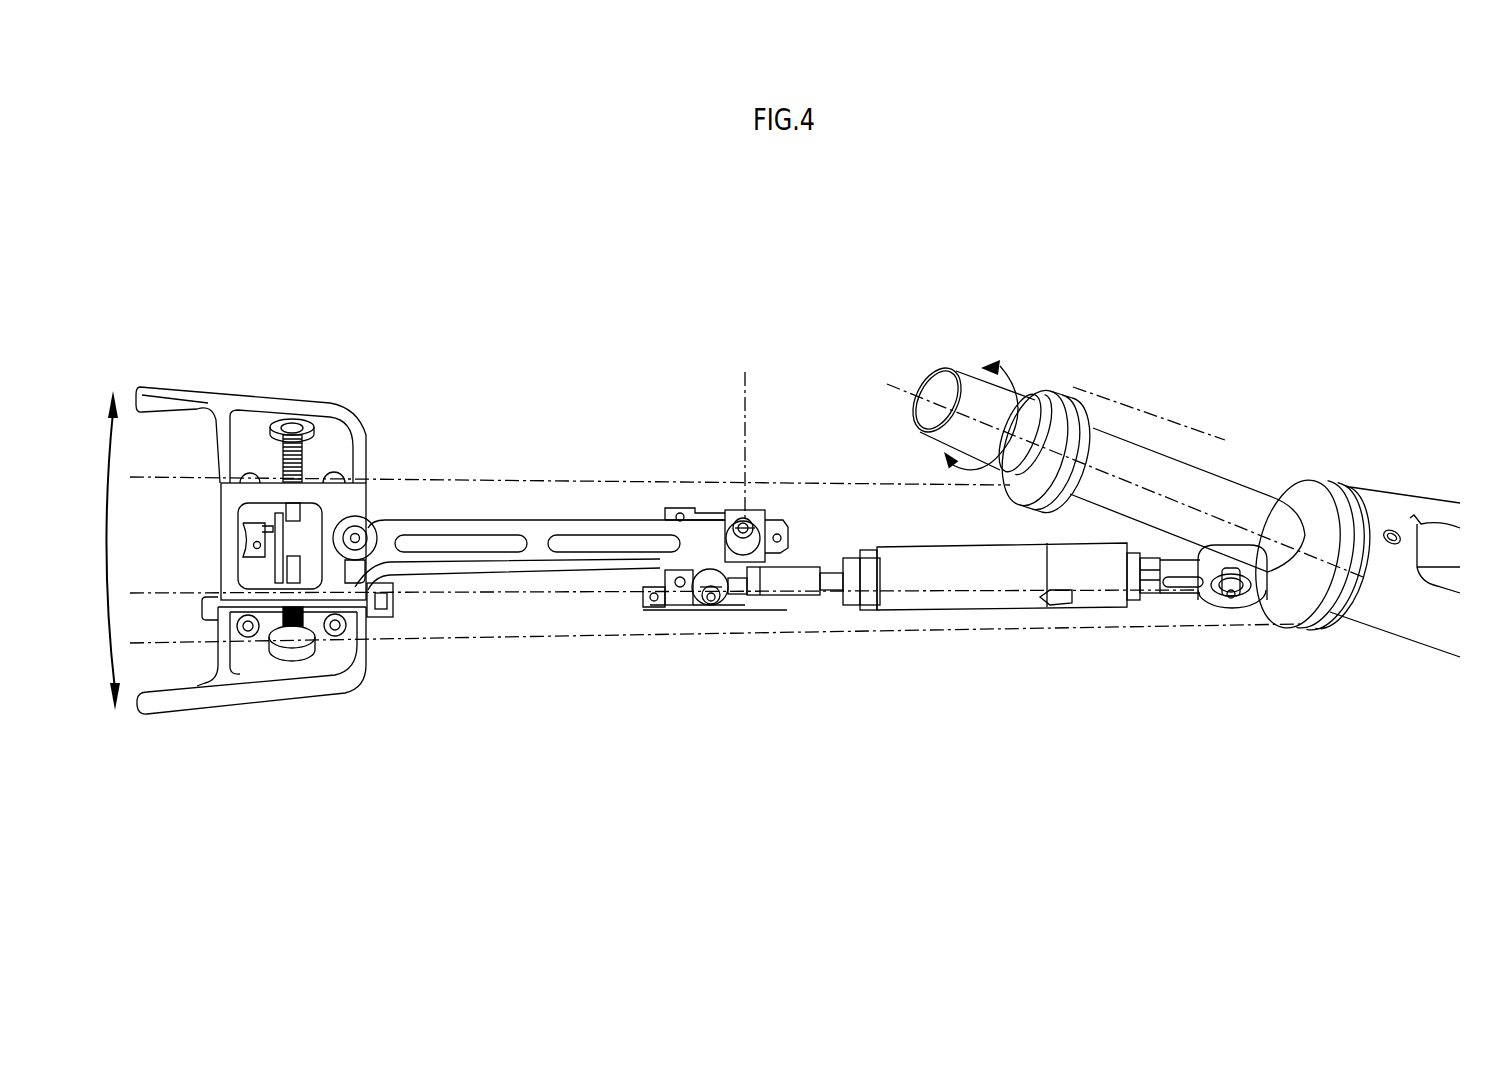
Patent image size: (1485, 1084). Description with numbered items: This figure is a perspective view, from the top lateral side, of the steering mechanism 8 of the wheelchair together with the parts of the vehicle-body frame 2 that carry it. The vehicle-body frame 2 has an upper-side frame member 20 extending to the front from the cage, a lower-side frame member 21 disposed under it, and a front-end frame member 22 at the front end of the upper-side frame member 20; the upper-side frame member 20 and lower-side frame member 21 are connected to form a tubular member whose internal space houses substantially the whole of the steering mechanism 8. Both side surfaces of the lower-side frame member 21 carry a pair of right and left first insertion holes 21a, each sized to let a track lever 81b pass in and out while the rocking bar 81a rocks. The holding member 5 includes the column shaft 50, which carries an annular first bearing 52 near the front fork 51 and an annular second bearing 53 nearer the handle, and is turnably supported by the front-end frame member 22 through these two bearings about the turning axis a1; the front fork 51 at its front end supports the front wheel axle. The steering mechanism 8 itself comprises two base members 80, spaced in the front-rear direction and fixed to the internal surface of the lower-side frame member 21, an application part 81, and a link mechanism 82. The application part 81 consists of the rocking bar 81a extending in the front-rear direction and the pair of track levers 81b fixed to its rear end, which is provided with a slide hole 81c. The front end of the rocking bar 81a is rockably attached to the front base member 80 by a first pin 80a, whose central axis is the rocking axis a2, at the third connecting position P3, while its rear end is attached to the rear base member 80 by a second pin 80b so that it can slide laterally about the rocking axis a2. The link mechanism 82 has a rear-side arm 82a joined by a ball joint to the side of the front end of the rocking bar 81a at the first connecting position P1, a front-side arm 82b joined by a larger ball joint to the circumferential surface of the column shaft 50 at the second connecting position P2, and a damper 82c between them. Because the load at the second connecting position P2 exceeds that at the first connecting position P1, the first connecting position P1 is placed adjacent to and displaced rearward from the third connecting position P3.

The vehicle-body frame 2 is at (1265, 457).
The holding member 5 is at (1141, 468).
The steering mechanism 8 is at (805, 544).
The upper-side frame member 20 is at (470, 488).
The lower-side frame member 21 is at (461, 546).
The first insertion holes 21a is at (212, 620).
The front-end frame member 22 is at (1203, 428).
The column shaft 50 is at (962, 382).
The front fork 51 is at (1382, 498).
The first bearing 52 is at (1294, 492).
The second bearing 53 is at (1068, 398).
The base members 80 is at (256, 545).
The first pin 80a is at (742, 523).
The second pin 80b is at (368, 520).
The application part 81 is at (529, 576).
The rocking bar 81a is at (533, 530).
The track levers 81b is at (243, 390).
The slide hole 81c is at (354, 572).
The link mechanism 82 is at (975, 634).
The rear-side arm 82a is at (806, 595).
The front-side arm 82b is at (1165, 592).
The damper 82c is at (924, 595).
The first connecting position P1 is at (713, 640).
The second connecting position P2 is at (1235, 634).
The third connecting position P3 is at (756, 504).
The turning axis a1 is at (897, 378).
The rocking axis a2 is at (748, 400).